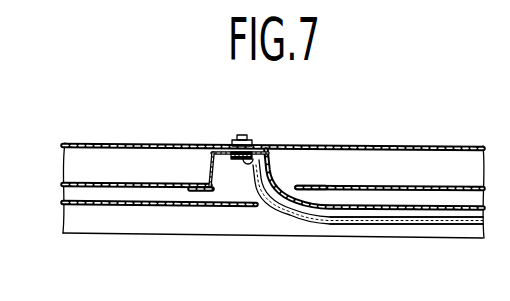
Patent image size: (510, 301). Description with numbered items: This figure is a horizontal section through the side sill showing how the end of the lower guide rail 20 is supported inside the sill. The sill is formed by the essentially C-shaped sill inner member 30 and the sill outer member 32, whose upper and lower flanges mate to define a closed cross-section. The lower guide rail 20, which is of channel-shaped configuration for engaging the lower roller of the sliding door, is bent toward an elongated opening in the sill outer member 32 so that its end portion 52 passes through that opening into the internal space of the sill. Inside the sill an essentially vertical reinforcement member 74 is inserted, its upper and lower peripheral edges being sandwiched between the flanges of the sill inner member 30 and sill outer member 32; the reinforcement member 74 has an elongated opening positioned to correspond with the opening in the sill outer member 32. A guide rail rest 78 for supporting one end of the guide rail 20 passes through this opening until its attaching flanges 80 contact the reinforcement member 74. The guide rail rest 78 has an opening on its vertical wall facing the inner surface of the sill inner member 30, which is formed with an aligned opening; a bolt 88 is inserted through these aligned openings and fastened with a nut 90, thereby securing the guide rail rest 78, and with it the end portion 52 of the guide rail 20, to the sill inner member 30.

The sill inner member 30 is at (150, 144).
The vertical reinforcement member 74 is at (123, 188).
The sill outer member 32 is at (186, 190).
The bolt 88 is at (264, 152).
The end portion 52 is at (272, 178).
The lower guide rail 20 is at (372, 212).
The guide rail rest 78 is at (288, 150).
The attaching flanges 80 is at (208, 192).
The nut 90 is at (242, 134).